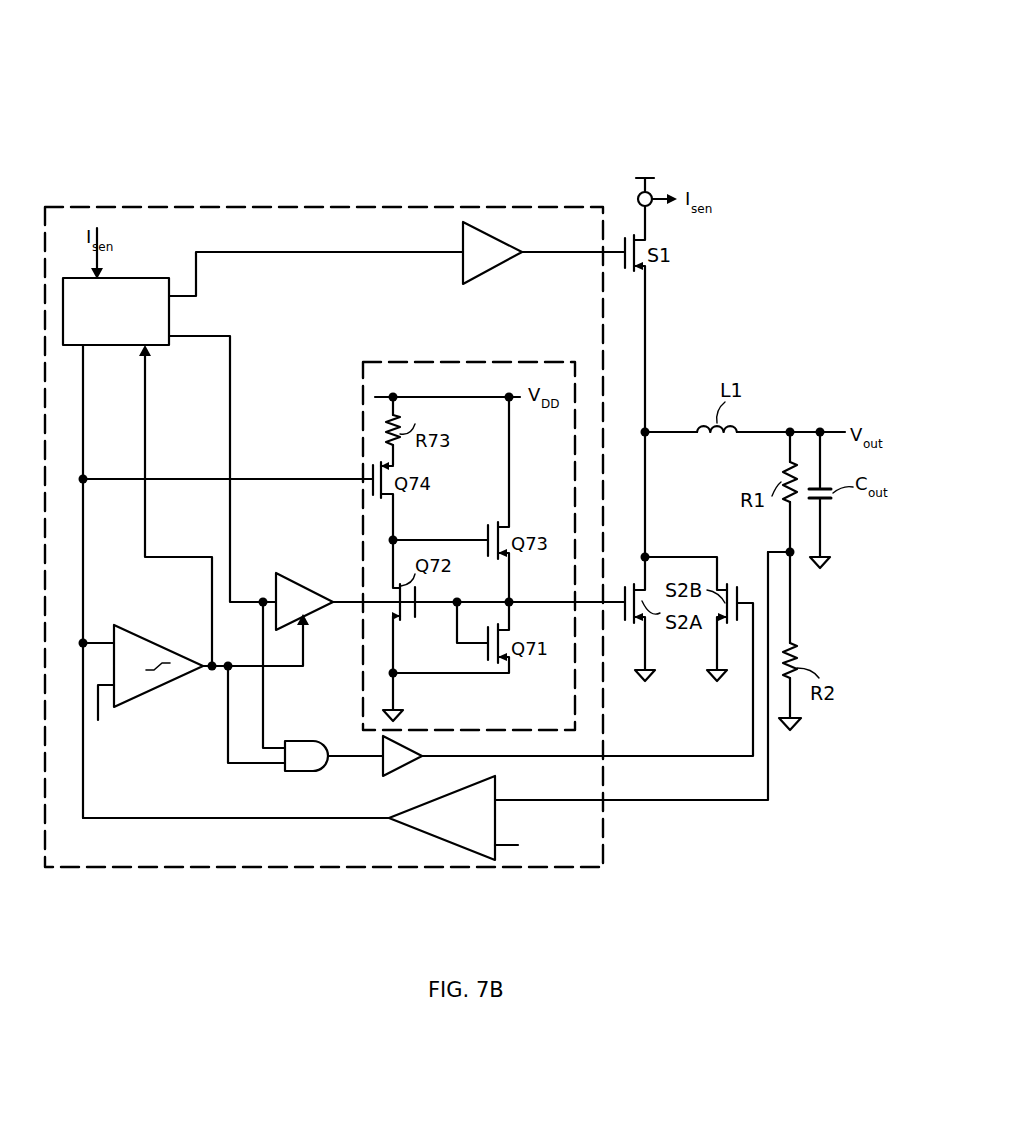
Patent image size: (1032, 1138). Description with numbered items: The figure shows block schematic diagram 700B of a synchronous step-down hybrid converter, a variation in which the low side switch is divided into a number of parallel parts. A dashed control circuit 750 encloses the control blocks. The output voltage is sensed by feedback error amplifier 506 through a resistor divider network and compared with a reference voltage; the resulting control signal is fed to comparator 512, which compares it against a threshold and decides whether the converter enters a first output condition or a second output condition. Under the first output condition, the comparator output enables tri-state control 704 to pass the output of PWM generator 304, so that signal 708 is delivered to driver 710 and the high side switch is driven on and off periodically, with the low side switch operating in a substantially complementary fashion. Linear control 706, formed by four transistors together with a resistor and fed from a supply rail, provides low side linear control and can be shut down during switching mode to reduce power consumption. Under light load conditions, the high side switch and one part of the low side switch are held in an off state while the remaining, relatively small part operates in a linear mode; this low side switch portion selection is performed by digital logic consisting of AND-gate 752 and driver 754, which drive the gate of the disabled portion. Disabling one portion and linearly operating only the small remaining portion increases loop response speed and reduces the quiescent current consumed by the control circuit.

The block schematic diagram 700B is at (762, 29).
The control circuit 750 is at (244, 859).
The PWM generator 304 is at (136, 338).
The signal 708 is at (313, 251).
The driver 710 is at (480, 241).
The linear control 706 is at (230, 356).
The tri-state control 704 is at (321, 569).
The comparator 512 is at (147, 688).
The AND-gate 752 is at (306, 752).
The driver 754 is at (380, 771).
The feedback error amplifier 506 is at (466, 798).